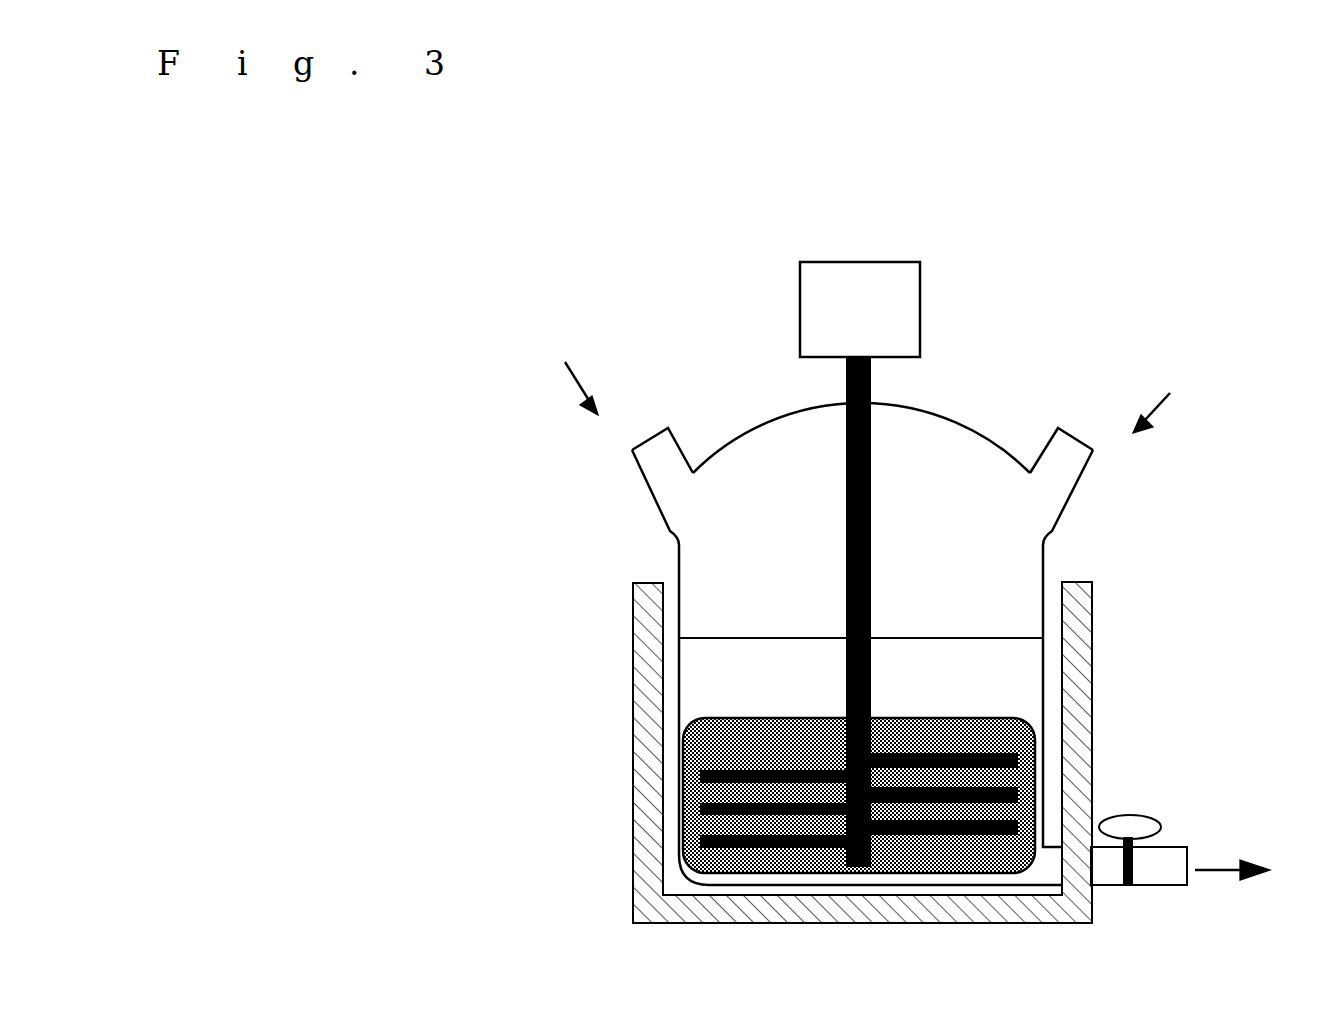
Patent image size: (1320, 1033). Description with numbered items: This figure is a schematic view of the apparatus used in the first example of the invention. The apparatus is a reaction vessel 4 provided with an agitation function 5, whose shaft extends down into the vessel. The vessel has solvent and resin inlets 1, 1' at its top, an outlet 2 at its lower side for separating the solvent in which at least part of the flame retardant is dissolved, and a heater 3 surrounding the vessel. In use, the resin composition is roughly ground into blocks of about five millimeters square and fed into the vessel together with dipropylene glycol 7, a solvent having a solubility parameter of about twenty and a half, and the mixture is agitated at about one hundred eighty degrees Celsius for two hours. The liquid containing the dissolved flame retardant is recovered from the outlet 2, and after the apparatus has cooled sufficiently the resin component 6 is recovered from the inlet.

The solvent and resin inlet 1 is at (1100, 432).
The solvent and resin inlet 1' is at (629, 417).
The outlet 2 is at (1172, 845).
The heater 3 is at (630, 681).
The reaction vessel 4 is at (950, 574).
The agitation function 5 is at (800, 315).
The resin component 6 is at (725, 742).
The dipropylene glycol 7 is at (972, 682).